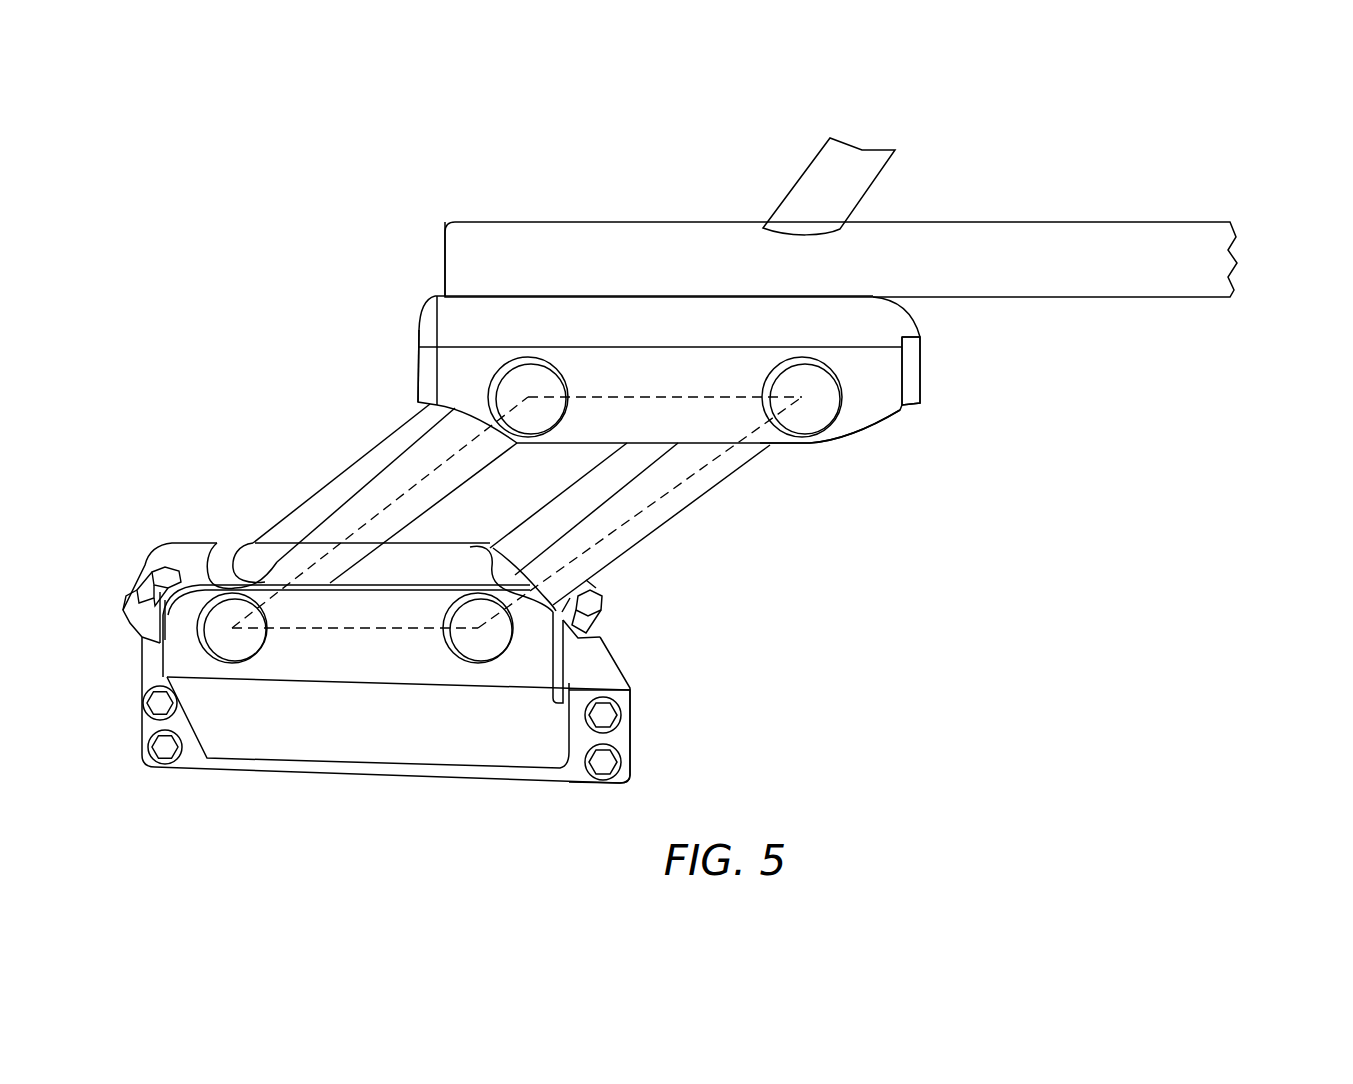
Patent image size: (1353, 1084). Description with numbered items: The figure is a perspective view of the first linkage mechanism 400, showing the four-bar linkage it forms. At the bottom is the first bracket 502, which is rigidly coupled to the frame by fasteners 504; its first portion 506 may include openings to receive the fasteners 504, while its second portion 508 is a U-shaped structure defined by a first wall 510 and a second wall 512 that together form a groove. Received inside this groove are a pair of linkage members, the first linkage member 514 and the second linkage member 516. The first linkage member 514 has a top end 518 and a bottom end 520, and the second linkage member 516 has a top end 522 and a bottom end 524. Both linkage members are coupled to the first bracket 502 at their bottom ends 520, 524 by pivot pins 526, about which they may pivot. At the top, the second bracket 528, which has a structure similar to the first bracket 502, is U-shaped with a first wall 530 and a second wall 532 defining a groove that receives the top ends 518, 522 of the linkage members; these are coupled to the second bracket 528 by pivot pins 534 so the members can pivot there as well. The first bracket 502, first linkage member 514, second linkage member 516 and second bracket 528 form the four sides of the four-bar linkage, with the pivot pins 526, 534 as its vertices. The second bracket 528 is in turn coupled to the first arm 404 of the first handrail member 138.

The first linkage mechanism 400 is at (689, 491).
The first arm 404 is at (1175, 243).
The first handrail member 138 is at (1240, 262).
The first bracket 502 is at (645, 738).
The fasteners 504 is at (158, 703).
The first portion 506 is at (390, 783).
The second portion 508 is at (413, 690).
The first wall 510 is at (172, 553).
The second wall 512 is at (177, 640).
The first linkage member 514 is at (340, 495).
The second linkage member 516 is at (645, 538).
The top end 518 is at (417, 400).
The bottom end 520 is at (250, 539).
The top end 522 is at (774, 450).
The bottom end 524 is at (585, 600).
The pivot pins 526 is at (232, 637).
The second bracket 528 is at (704, 309).
The first wall 530 is at (453, 294).
The second wall 532 is at (878, 370).
The pivot pins 534 is at (540, 392).